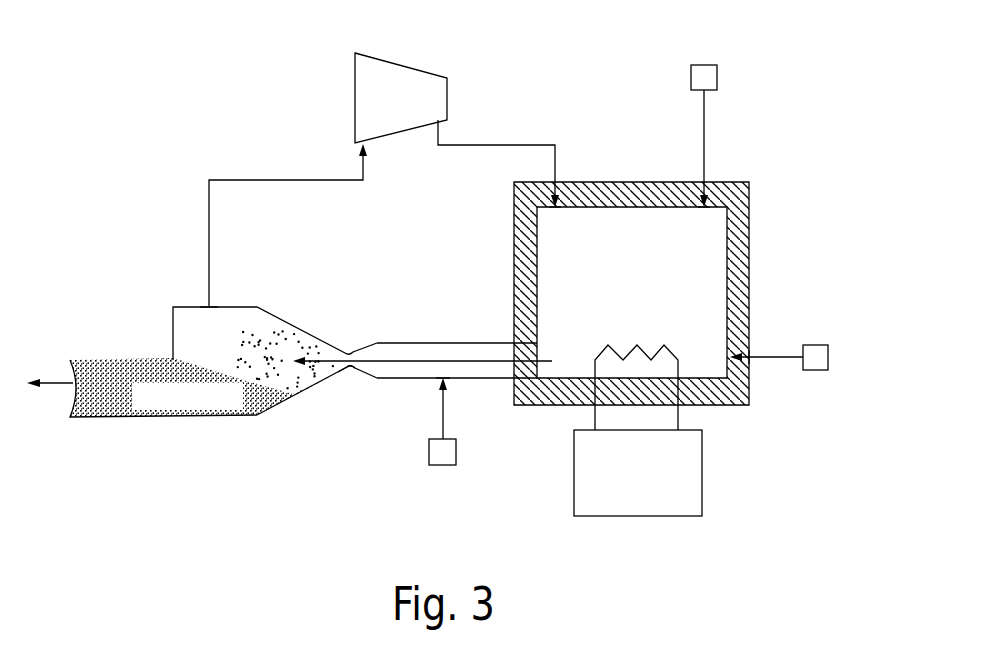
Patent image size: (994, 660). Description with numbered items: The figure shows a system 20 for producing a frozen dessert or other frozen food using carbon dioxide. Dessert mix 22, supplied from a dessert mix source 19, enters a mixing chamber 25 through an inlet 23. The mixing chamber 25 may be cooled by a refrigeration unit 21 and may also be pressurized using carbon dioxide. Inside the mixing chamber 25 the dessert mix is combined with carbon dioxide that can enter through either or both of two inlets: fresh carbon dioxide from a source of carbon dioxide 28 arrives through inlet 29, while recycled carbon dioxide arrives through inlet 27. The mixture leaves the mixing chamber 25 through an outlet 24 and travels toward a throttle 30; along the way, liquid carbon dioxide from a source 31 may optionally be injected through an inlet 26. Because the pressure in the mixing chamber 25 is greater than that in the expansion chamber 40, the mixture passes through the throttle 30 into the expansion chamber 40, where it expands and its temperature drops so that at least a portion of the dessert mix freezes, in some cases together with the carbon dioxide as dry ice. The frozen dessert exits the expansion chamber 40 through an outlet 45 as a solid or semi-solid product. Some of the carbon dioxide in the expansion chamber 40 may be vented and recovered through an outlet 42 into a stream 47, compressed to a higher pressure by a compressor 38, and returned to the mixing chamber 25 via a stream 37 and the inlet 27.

The dessert mix source 19 is at (815, 370).
The system 20 is at (183, 67).
The refrigeration unit 21 is at (702, 482).
The dessert mix 22 is at (783, 357).
The inlet 23 is at (752, 338).
The outlet 24 is at (510, 342).
The mixing chamber 25 is at (752, 220).
The inlet 26 is at (442, 379).
The inlet 27 is at (557, 205).
The source of carbon dioxide 28 is at (717, 78).
The inlet 29 is at (718, 203).
The throttle 30 is at (345, 367).
The source 31 is at (429, 455).
The stream 37 is at (487, 146).
The compressor 38 is at (355, 75).
The expansion chamber 40 is at (178, 307).
The outlet 42 is at (207, 307).
The outlet 45 is at (130, 418).
The stream 47 is at (207, 202).